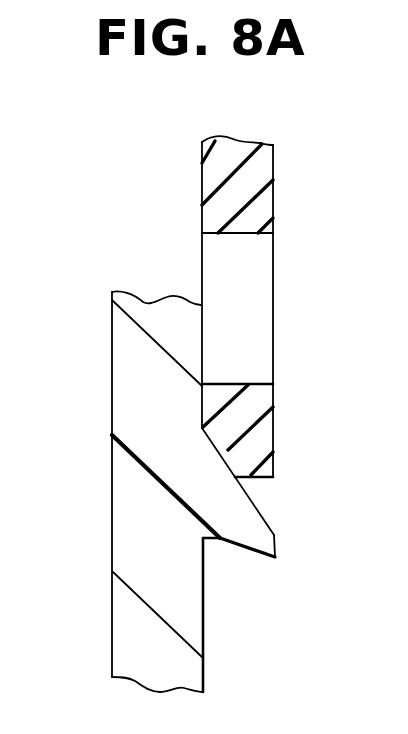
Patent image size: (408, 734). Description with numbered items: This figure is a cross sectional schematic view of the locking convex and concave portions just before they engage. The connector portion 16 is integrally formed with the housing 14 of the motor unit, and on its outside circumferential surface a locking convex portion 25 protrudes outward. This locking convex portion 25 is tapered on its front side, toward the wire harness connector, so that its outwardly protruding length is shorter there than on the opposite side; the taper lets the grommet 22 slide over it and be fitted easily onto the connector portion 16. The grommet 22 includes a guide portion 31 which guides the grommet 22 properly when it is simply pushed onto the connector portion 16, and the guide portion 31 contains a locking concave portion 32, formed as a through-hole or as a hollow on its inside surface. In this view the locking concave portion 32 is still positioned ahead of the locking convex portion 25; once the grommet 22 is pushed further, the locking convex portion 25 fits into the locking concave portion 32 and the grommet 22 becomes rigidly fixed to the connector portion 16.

The housing 14 is at (111, 545).
The connector portion 16 is at (204, 632).
The grommet 22 is at (244, 304).
The locking convex portion 25 is at (276, 537).
The guide portion 31 is at (208, 182).
The locking concave portion 32 is at (243, 233).